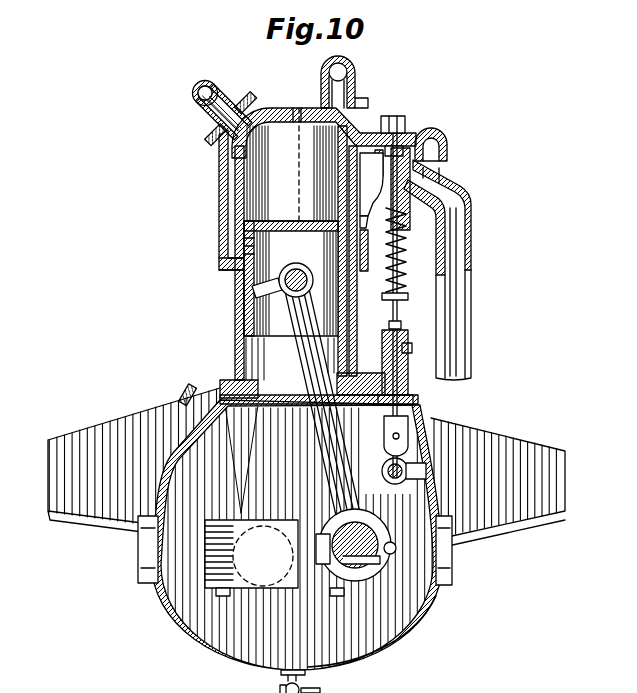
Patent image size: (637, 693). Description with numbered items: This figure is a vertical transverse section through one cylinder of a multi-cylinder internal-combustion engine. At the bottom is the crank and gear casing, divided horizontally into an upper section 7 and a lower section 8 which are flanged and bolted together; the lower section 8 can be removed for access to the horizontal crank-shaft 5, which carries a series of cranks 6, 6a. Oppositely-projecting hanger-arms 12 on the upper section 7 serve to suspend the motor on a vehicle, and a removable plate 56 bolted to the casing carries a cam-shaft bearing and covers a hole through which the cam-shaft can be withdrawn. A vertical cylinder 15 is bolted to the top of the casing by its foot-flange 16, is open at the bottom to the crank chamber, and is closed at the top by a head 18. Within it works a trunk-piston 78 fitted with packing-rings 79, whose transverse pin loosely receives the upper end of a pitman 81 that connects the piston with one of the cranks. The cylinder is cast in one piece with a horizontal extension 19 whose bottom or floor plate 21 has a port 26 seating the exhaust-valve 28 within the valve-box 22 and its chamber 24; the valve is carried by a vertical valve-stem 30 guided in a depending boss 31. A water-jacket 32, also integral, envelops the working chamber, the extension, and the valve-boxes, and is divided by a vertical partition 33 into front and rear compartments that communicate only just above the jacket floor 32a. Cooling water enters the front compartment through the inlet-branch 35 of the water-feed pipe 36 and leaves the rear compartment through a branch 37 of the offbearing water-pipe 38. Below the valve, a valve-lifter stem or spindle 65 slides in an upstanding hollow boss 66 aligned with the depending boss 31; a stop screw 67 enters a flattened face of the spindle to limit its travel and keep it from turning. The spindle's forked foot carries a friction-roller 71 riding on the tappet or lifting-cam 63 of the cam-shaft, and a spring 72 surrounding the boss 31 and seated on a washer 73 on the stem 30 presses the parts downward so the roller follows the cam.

The crank-shaft 5 is at (284, 554).
The crank 6 is at (210, 172).
The crank 6a is at (358, 551).
The upper section of casing 7 is at (422, 414).
The lower section of casing 8 is at (418, 594).
The hanger-arms 12 is at (72, 428).
The cylinder 15 is at (270, 280).
The foot-flange 16 is at (216, 372).
The head 18 is at (296, 128).
The horizontal extension 19 is at (352, 120).
The bottom or floor plate 21 is at (366, 160).
The valve-box 22 is at (366, 203).
The chamber 24 is at (397, 156).
The port 26 is at (437, 127).
The exhaust-valve 28 is at (399, 116).
The valve-stem 30 is at (395, 232).
The depending boss 31 is at (370, 259).
The water-jacket 32 is at (212, 150).
The bottom or floor of the jacket 32a is at (222, 258).
The vertical partition 33 is at (294, 181).
The inlet-branch 35 is at (346, 88).
The water-feed pipe 36 is at (330, 54).
The branch 37 is at (205, 105).
The offbearing water-pipe 38 is at (190, 88).
The removable plate 56 is at (283, 292).
The tappet or lifting-cam 63 is at (420, 438).
The stem or spindle 65 is at (401, 378).
The hollow boss 66 is at (383, 332).
The stop screw or bolt 67 is at (398, 341).
The friction-roller 71 is at (380, 433).
The spring 72 is at (395, 256).
The washer 73 is at (392, 291).
The trunk-piston 78 is at (302, 213).
The packing-rings 79 is at (236, 224).
The pitman 81 is at (313, 426).